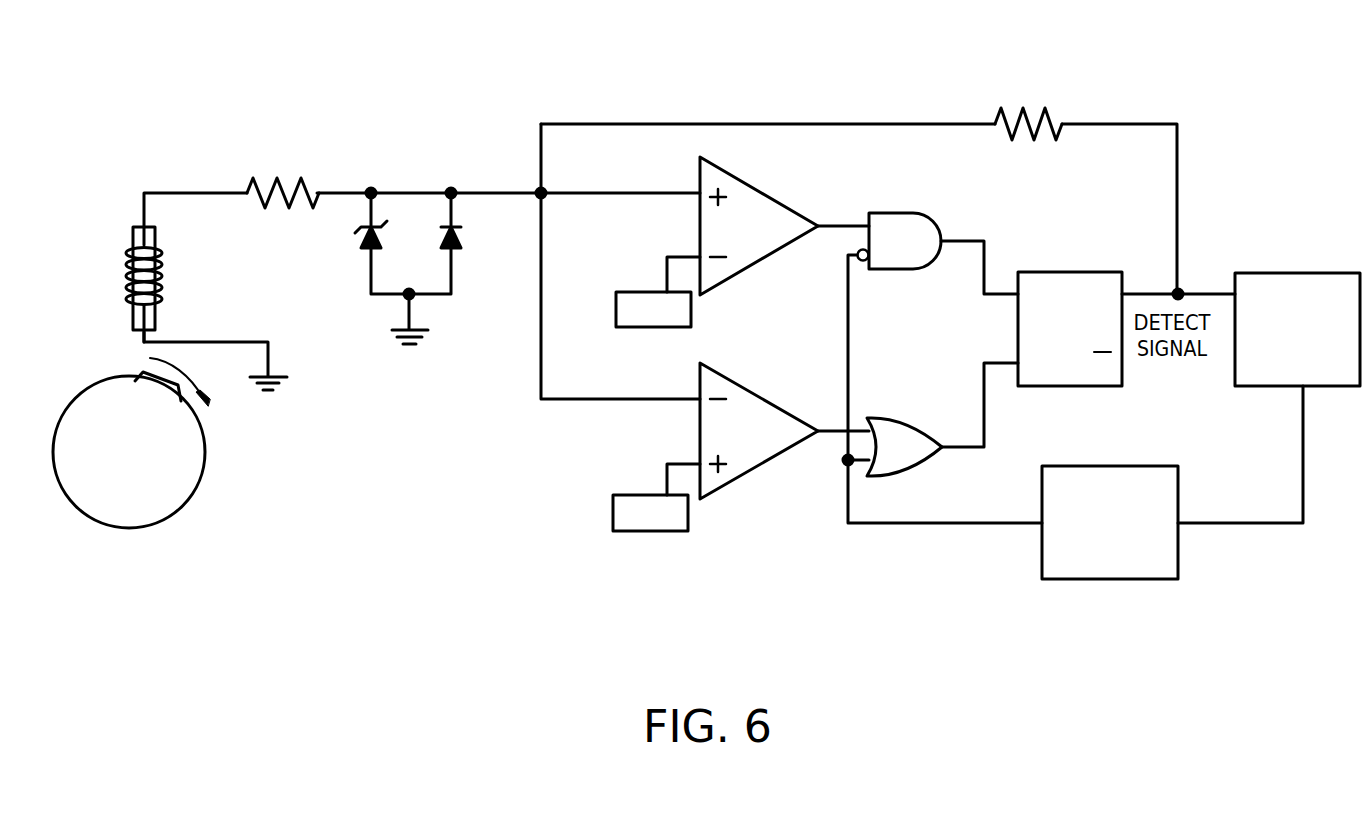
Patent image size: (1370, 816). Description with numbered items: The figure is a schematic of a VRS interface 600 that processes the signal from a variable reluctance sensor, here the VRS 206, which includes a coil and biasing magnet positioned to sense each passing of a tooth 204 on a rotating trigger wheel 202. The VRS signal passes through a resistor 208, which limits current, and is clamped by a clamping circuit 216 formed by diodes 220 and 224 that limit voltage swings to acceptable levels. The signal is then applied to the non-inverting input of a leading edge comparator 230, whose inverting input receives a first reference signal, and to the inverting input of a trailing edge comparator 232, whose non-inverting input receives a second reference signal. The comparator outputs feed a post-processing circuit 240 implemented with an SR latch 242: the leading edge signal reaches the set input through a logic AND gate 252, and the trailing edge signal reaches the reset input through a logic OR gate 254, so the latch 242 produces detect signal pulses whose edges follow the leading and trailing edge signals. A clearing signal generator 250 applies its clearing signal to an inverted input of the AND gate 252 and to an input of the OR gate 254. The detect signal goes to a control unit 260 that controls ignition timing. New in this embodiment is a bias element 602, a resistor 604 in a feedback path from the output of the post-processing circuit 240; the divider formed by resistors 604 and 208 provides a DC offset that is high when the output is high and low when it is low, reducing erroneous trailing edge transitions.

The trigger wheel 202 is at (205, 458).
The tooth 204 is at (143, 372).
The VRS 206 is at (128, 252).
The resistor 208 is at (276, 176).
The clamping circuit 216 is at (420, 206).
The diode 220 is at (357, 232).
The diode 224 is at (455, 249).
The leading edge comparator 230 is at (744, 182).
The trailing edge comparator 232 is at (748, 382).
The post-processing circuit 240 is at (990, 318).
The SR latch 242 is at (1047, 271).
The clearing signal generator 250 is at (1080, 465).
The logic AND gate 252 is at (894, 212).
The logic OR gate 254 is at (892, 416).
The control unit 260 is at (1306, 272).
The VRS interface 600 is at (778, 630).
The bias element 602 is at (798, 92).
The resistor 604 is at (1024, 108).